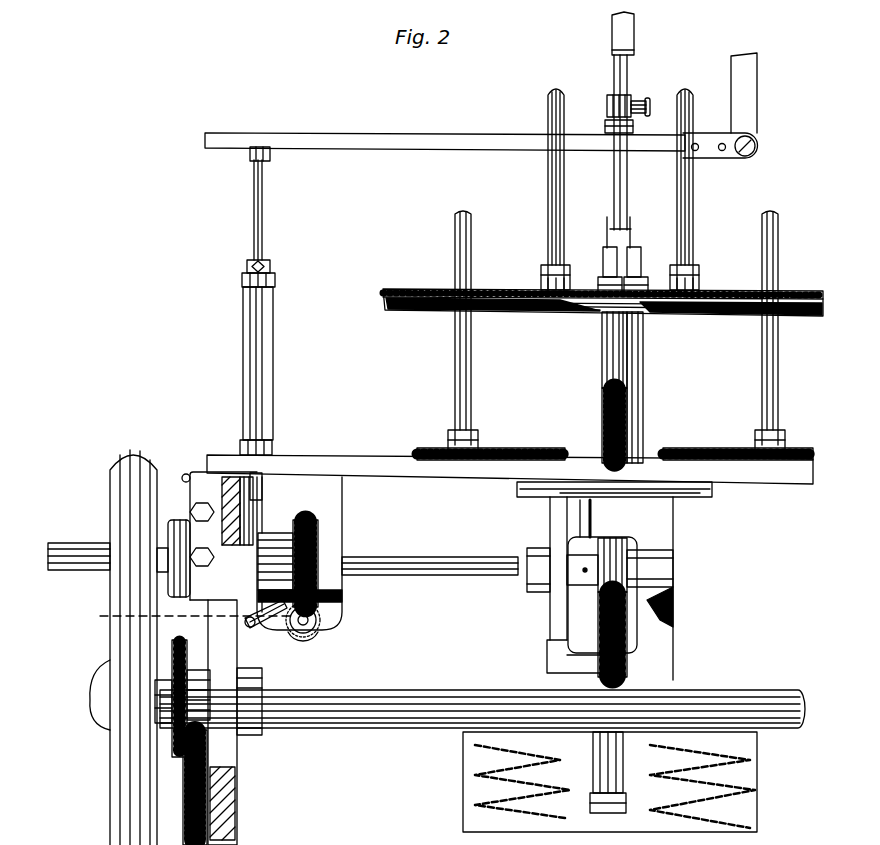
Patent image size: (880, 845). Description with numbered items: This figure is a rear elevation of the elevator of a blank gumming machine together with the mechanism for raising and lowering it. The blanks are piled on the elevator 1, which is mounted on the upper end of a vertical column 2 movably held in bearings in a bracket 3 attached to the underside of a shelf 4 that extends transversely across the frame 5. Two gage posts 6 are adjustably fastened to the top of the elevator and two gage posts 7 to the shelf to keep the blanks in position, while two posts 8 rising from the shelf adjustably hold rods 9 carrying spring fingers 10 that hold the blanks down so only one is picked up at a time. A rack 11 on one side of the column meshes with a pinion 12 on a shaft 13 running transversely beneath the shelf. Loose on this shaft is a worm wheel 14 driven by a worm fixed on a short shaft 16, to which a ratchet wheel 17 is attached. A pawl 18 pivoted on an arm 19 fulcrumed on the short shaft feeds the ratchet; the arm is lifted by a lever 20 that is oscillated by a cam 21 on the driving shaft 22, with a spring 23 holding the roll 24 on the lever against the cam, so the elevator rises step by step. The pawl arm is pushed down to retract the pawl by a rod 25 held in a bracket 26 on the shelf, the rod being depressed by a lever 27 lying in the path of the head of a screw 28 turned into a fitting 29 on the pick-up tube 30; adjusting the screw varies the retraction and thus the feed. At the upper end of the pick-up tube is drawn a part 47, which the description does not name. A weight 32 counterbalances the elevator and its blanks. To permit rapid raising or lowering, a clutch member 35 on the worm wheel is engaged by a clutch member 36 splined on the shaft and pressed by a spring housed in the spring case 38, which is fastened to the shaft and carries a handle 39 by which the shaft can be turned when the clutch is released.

The elevator 1 is at (411, 290).
The vertical column 2 is at (600, 358).
The bracket 3 is at (676, 533).
The shelf 4 is at (748, 483).
The frame 5 is at (219, 658).
The gage posts 6 is at (546, 184).
The gage posts 7 is at (473, 360).
The posts 8 is at (650, 355).
The rods 9 is at (603, 260).
The spring fingers 10 is at (605, 222).
The rack 11 is at (598, 430).
The pinion 12 is at (580, 550).
The shaft 13 is at (479, 578).
The worm wheel 14 is at (305, 538).
The short shaft 16 is at (322, 622).
The ratchet wheel 17 is at (308, 640).
The pawl 18 is at (285, 640).
The arm 19 is at (262, 632).
The lever 20 is at (172, 645).
The cam 21 is at (170, 745).
The driving shaft 22 is at (400, 728).
The spring 23 is at (195, 822).
The roll 24 is at (100, 616).
The rod 25 is at (267, 211).
The bracket 26 is at (276, 380).
The lever 27 is at (452, 138).
The screw 28 is at (607, 123).
The fitting 29 is at (632, 98).
The pick-up tube 30 is at (612, 184).
The weight 32 is at (610, 782).
The clutch member 35 is at (288, 538).
The clutch member 36 is at (272, 530).
The spring case 38 is at (183, 520).
The handle 39 is at (92, 543).
The stop block 47 is at (640, 36).